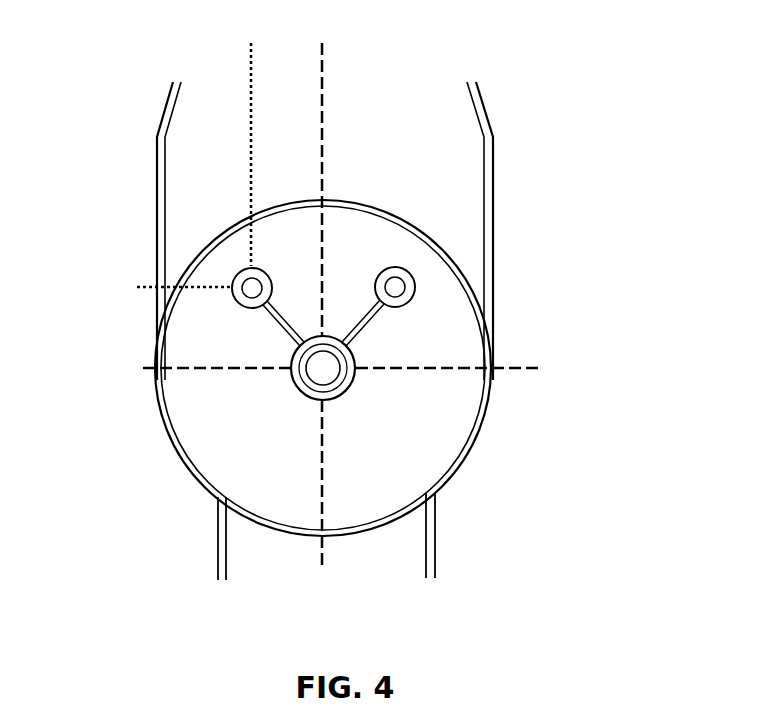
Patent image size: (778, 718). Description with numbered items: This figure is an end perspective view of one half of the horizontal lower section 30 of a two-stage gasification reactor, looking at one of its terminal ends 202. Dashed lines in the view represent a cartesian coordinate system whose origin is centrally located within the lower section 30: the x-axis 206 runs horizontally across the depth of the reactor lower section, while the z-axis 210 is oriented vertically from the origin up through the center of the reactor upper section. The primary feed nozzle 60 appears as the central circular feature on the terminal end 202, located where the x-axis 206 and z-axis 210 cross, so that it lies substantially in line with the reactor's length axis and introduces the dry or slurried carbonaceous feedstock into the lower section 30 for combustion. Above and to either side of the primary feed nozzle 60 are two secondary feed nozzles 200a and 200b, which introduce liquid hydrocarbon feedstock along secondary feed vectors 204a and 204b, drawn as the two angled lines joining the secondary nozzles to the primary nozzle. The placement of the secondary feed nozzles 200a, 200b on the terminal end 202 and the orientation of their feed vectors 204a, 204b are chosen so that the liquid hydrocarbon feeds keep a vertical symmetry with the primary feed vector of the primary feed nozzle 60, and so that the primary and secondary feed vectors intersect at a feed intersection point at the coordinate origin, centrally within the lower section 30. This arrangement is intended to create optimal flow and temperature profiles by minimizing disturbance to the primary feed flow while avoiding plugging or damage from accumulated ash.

The lower section 30 is at (537, 237).
The primary feed nozzle 60 is at (359, 383).
The secondary feed nozzle 200a is at (256, 264).
The secondary feed nozzle 200b is at (379, 268).
The terminal end 202 is at (266, 439).
The secondary feed vector 204a is at (275, 327).
The secondary feed vector 204b is at (373, 327).
The x-axis 206 is at (517, 355).
The z-axis 210 is at (330, 103).